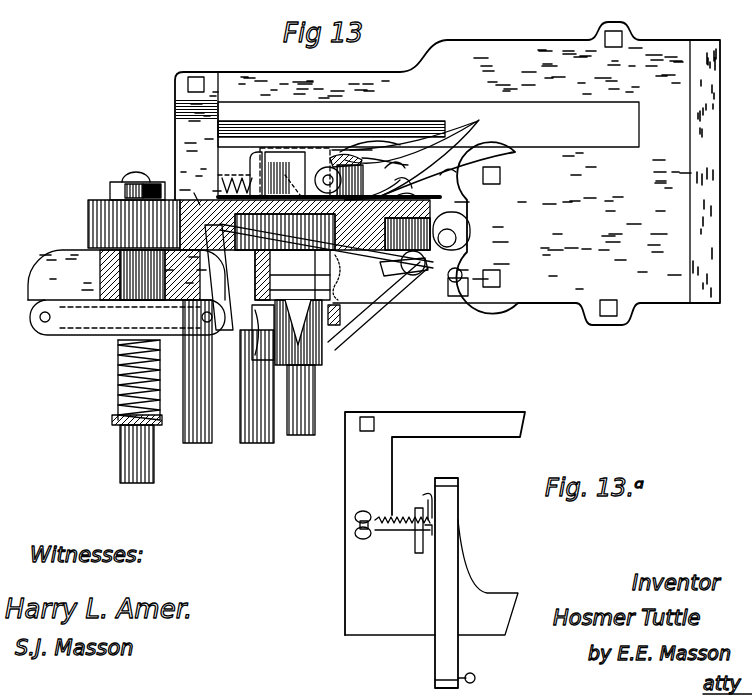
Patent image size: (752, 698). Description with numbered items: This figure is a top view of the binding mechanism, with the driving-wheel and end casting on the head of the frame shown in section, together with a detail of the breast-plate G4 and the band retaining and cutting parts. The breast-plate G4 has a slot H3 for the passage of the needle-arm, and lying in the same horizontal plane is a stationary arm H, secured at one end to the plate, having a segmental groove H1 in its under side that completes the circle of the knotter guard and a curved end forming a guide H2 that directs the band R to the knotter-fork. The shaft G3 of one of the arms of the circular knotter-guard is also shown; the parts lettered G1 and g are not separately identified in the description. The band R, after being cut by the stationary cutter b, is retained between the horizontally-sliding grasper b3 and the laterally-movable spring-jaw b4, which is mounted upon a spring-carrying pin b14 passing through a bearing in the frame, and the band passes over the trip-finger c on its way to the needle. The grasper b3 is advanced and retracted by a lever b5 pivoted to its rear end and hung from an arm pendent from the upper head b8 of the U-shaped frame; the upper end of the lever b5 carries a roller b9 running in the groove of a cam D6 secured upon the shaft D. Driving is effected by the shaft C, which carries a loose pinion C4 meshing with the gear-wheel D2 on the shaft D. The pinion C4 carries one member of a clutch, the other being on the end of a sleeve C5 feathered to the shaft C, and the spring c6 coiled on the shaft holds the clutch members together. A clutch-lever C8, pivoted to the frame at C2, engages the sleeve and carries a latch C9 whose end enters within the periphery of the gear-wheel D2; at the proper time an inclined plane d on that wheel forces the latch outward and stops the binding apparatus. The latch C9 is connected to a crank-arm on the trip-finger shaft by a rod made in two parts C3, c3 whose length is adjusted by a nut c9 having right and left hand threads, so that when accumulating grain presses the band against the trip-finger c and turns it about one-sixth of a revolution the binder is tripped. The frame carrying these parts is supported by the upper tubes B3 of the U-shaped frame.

In FIG. 13, the breast-plate G4 is at (208, 90).
In FIG. 13A, the breast-plate G4 is at (405, 553).
In FIG. 13, the slot H3 is at (428, 124).
In FIG. 13, the band R is at (320, 147).
In FIG. 13, the guide H2 is at (412, 159).
In FIG. 13, the arm H is at (377, 133).
In FIG. 13, the segmental groove H1 is at (357, 131).
In FIG. 13, the spring-carrying pin b14 is at (232, 186).
In FIG. 13A, the spring-carrying pin b14 is at (388, 518).
In FIG. 13, the inclined plane d is at (192, 192).
In FIG. 13, the spring-jaw b4 is at (256, 166).
In FIG. 13A, the spring-jaw b4 is at (423, 500).
In FIG. 13, the sliding grasper b3 is at (272, 158).
In FIG. 13A, the sliding grasper b3 is at (450, 500).
In FIG. 13, the stationary cutter b is at (297, 162).
In FIG. 13, the cam g is at (363, 175).
In FIG. 13, the trip-finger c is at (427, 178).
In FIG. 13, the gear-wheel D2 is at (305, 225).
In FIG. 13, the pinion C4 is at (88, 232).
In FIG. 13, the upper head b8 is at (126, 274).
In FIG. 13, the sleeve C5 is at (132, 275).
In FIG. 13, the clutch-lever C8 is at (90, 323).
In FIG. 13, the pivot C2 is at (40, 325).
In FIG. 13, the spring c6 is at (116, 394).
In FIG. 13, the shaft C is at (129, 454).
In FIG. 13, the upper tubes B3 is at (228, 385).
In FIG. 13, the shaft D is at (301, 414).
In FIG. 13, the latch C9 is at (230, 332).
In FIG. 13, the rod C3 is at (292, 275).
In FIG. 13, the rod c3 is at (343, 277).
In FIG. 13, the roller b9 is at (336, 325).
In FIG. 13, the cam D6 is at (334, 356).
In FIG. 13, the lever b5 is at (336, 317).
In FIG. 13, the nut c9 is at (410, 278).
In FIG. 13, the shaft G3 is at (392, 293).
In FIG. 13, the pivot pin G1 is at (415, 275).